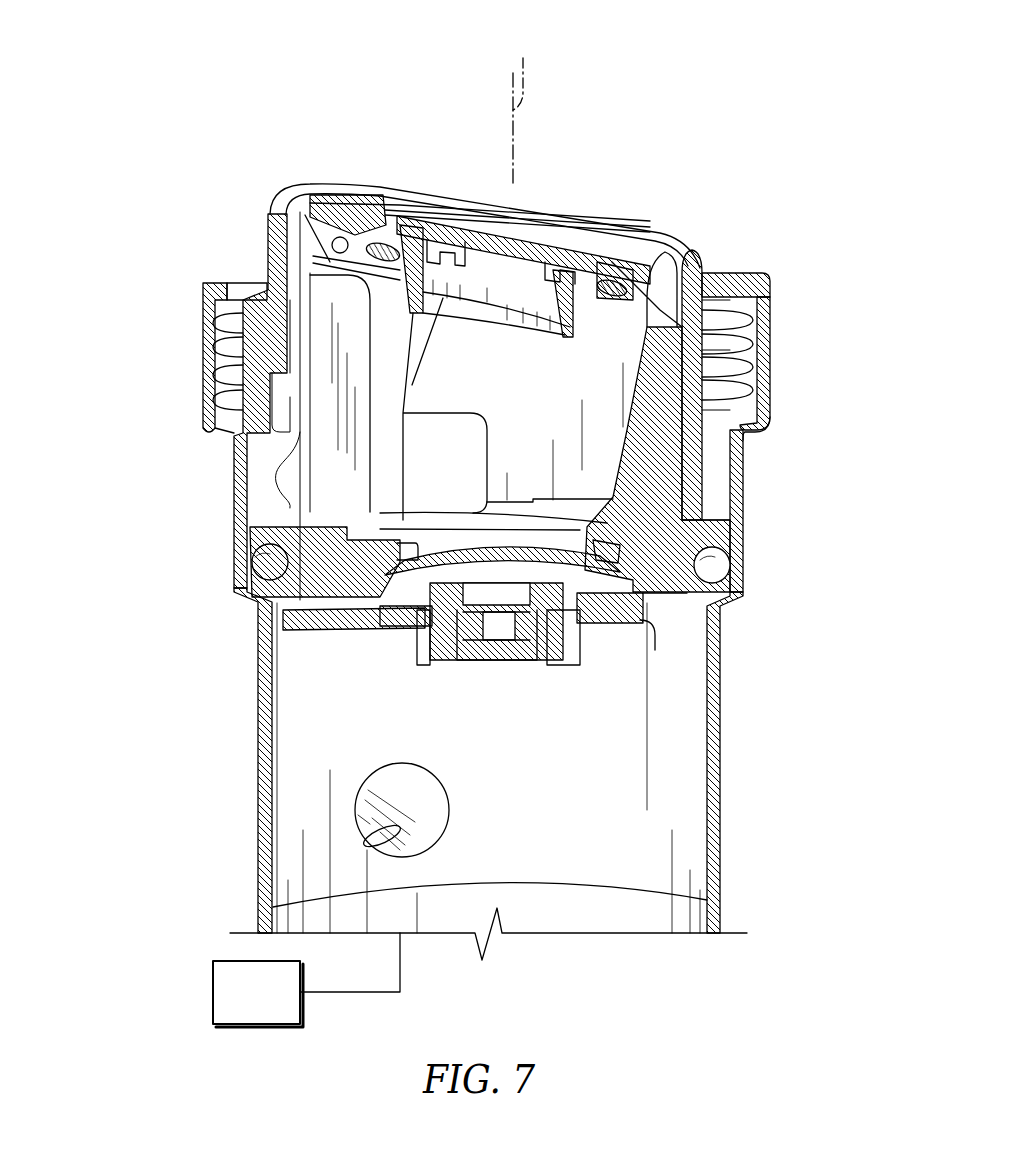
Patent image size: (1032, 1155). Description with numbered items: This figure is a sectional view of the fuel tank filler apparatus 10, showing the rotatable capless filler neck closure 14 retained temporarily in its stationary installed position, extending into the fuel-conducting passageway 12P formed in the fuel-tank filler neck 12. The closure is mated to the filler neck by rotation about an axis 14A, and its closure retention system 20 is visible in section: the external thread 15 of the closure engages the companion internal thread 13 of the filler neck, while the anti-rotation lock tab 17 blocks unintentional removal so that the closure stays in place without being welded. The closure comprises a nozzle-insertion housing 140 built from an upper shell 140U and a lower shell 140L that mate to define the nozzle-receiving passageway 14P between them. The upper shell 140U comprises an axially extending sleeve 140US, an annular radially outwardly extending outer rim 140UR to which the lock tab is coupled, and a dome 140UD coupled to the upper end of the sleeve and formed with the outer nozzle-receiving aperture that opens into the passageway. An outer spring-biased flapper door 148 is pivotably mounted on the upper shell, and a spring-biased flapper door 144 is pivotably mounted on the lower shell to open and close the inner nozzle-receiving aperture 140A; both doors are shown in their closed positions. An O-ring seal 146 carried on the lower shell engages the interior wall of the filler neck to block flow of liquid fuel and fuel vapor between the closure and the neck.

The fuel tank filler apparatus 10 is at (718, 115).
The fuel-tank filler neck 12 is at (723, 793).
The fuel-conducting passageway 12P is at (643, 863).
The internal thread 13 is at (205, 367).
The rotatable capless filler neck closure 14 is at (680, 224).
The axis 14A is at (524, 111).
The nozzle-receiving passageway 14P is at (575, 397).
The external thread 15 is at (205, 352).
The anti-rotation lock tab 17 is at (203, 297).
The closure retention system 20 is at (107, 285).
The nozzle-insertion housing 140 is at (658, 215).
The inner nozzle-receiving aperture 140A is at (573, 632).
The lower shell 140L is at (270, 622).
The upper shell 140U is at (263, 243).
The dome 140UD is at (372, 188).
The outer rim 140UR is at (737, 272).
The axially extending sleeve 140US is at (698, 466).
The spring-biased flapper door 144 is at (412, 640).
The O-ring seal 146 is at (253, 578).
The outer spring-biased flapper door 148 is at (472, 226).